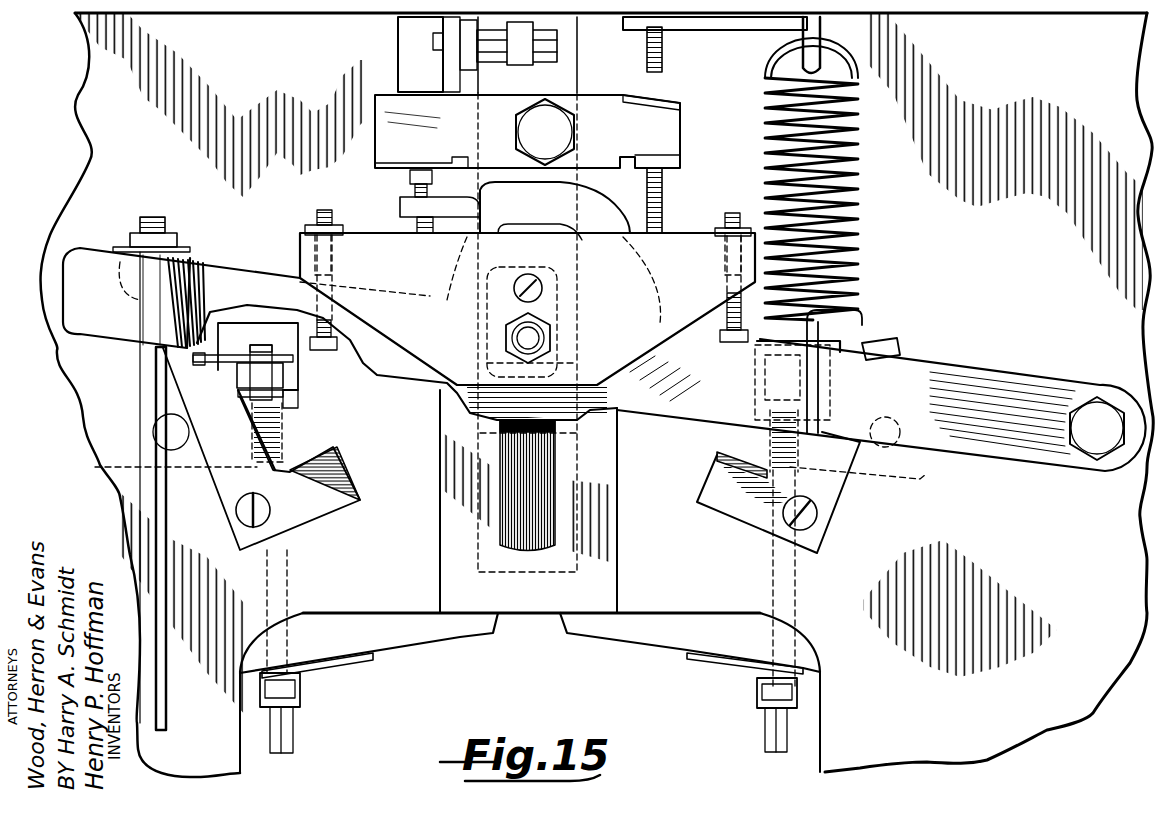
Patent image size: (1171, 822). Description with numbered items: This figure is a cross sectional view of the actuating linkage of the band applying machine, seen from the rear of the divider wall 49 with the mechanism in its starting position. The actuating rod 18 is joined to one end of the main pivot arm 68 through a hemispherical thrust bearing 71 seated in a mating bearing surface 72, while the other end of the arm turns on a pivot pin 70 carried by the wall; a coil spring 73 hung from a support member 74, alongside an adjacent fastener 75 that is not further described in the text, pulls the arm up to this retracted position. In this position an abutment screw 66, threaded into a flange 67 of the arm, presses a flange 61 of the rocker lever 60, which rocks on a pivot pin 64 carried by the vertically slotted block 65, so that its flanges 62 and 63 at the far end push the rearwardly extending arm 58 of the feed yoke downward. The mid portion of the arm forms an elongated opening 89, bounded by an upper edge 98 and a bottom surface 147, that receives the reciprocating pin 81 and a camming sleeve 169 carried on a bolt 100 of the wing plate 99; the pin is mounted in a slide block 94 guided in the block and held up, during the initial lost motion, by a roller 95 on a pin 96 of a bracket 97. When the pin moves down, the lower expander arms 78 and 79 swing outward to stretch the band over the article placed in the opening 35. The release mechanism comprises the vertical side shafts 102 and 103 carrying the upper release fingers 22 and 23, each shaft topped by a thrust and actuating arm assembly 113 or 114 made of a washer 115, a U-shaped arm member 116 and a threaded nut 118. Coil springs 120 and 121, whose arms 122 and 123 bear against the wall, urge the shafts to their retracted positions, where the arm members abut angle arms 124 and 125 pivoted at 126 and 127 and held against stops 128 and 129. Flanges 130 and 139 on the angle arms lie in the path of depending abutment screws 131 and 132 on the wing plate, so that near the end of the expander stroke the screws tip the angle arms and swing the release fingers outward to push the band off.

The actuating rod 18 is at (158, 732).
The upper release finger 22 is at (360, 670).
The upper release finger 23 is at (698, 668).
The opening 35 is at (533, 688).
The divider wall 49 is at (100, 180).
The rearwardly extending arm 58 is at (662, 192).
The rocker lever 60 is at (590, 103).
The flange 61 is at (400, 163).
The flange 62 is at (680, 105).
The flange 63 is at (672, 160).
The pivot pin 64 is at (545, 132).
The vertically slotted block 65 is at (620, 590).
The abutment screw 66 is at (410, 190).
The flange 67 is at (440, 215).
The main pivot arm 68 is at (240, 272).
The pivot pin 70 is at (1098, 428).
The hemispherical thrust bearing 71 is at (185, 252).
The bearing surface 72 is at (148, 301).
The coil spring 73 is at (858, 186).
The support member 74 is at (805, 35).
The screw 75 is at (663, 48).
The lower expander arm 78 is at (355, 620).
The lower expander arm 79 is at (718, 622).
The reciprocating pin 81 is at (538, 338).
The elongated opening 89 is at (628, 275).
The slide block 94 is at (577, 75).
The roller 95 is at (514, 72).
The pin 96 is at (438, 50).
The bracket 97 is at (398, 39).
The upper edge 98 is at (530, 224).
The wing plate 99 is at (660, 352).
The bolt 100 is at (516, 292).
The vertical side shaft 102 is at (283, 753).
The vertical side shaft 103 is at (775, 752).
The thrust and actuating arm assembly 113 is at (300, 400).
The thrust and actuating arm assembly 114 is at (858, 333).
The washer 115 is at (287, 410).
The U-shaped arm member 116 is at (222, 355).
The threaded nut 118 is at (245, 378).
The coil spring 120 is at (284, 447).
The coil spring 121 is at (760, 422).
The spring arm 122 is at (100, 468).
The spring arm 123 is at (922, 483).
The angle arm 124 is at (305, 505).
The angle arm 125 is at (843, 500).
The pivot 126 is at (820, 540).
The pivot 127 is at (238, 515).
The stop 128 is at (900, 448).
The stop 129 is at (160, 435).
The flange 130 is at (717, 456).
The abutment screw 131 is at (325, 350).
The abutment screw 132 is at (733, 350).
The flange 139 is at (340, 462).
The bottom surface 147 is at (578, 365).
The camming sleeve 169 is at (517, 266).